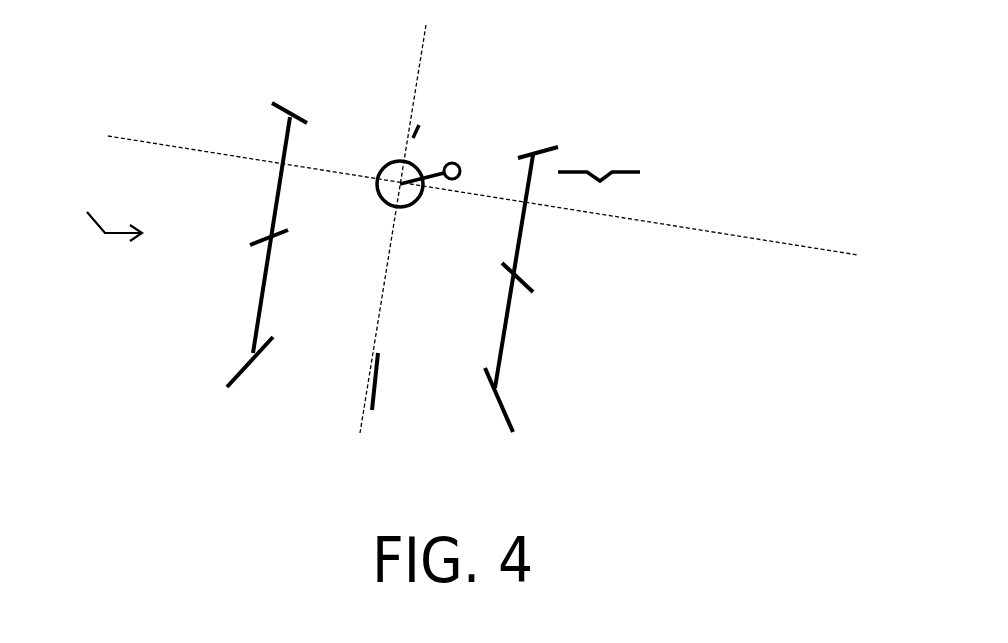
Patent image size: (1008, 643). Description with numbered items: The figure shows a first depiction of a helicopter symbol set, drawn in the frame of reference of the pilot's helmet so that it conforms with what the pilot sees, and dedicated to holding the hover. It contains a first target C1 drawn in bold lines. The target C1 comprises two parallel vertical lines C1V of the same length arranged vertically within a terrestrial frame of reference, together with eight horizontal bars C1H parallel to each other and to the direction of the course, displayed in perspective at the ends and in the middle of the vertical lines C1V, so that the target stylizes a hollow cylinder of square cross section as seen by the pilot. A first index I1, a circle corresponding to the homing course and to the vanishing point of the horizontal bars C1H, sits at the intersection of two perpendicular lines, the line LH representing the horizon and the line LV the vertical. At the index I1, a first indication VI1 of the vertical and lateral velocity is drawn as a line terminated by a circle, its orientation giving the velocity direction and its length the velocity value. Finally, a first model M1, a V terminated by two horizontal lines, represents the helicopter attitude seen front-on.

The second line representing the vertical LV is at (420, 52).
The first line representing the horizon LH is at (745, 236).
The first target C1 is at (107, 213).
The first index I1 is at (383, 204).
The first indication of vertical and lateral velocity VI1 is at (452, 163).
The first model M1 is at (617, 171).
The parallel vertical lines C1V is at (253, 310).
The horizontal bars C1H is at (378, 380).